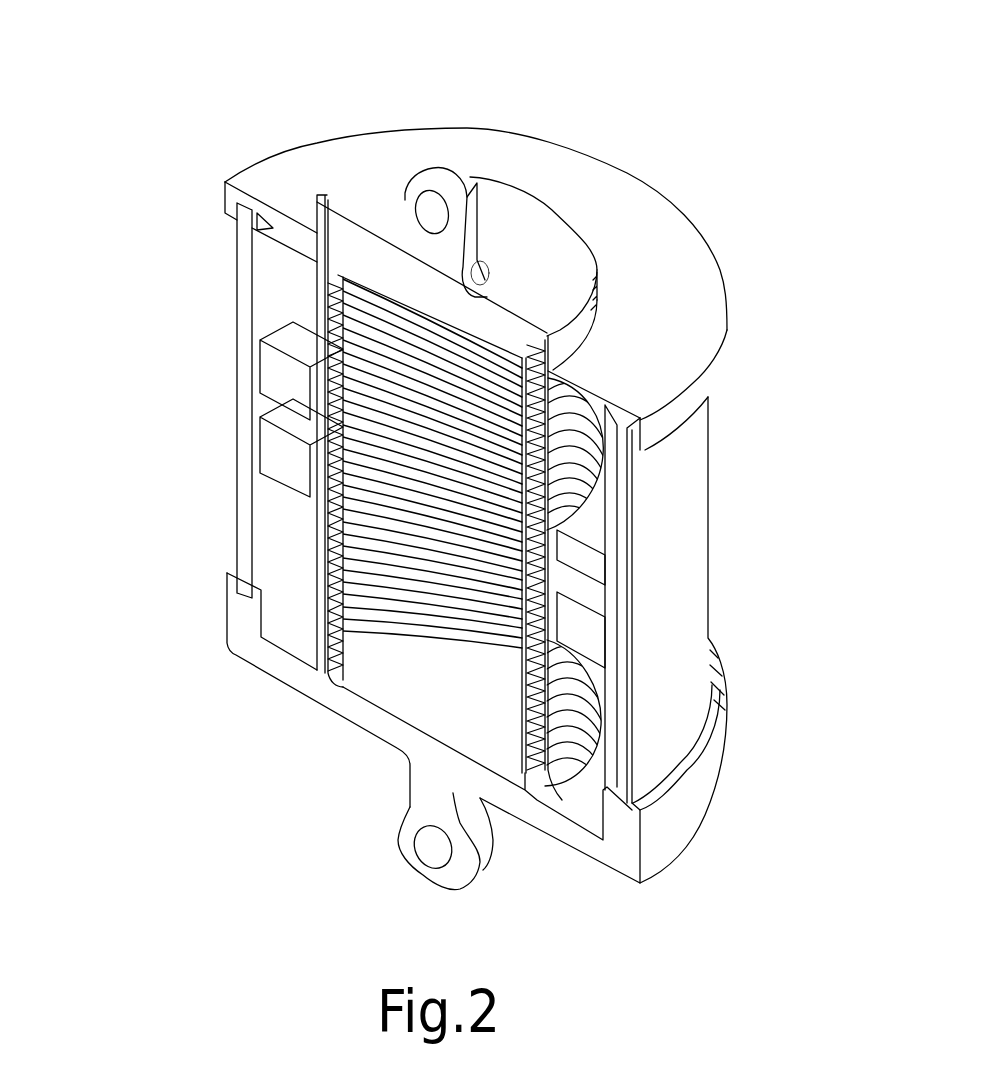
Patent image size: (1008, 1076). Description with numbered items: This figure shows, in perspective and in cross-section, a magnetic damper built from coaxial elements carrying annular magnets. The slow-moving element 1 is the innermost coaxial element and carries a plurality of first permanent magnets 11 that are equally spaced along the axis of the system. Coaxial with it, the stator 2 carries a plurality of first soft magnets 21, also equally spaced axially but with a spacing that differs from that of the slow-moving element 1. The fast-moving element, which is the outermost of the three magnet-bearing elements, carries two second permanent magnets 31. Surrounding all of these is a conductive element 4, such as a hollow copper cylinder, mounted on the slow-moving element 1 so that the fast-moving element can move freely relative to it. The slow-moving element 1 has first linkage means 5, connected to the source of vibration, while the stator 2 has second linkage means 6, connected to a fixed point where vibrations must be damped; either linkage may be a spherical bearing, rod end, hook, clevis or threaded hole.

The slow-moving element 1 is at (389, 748).
The stator 2 is at (368, 184).
The conductive element 4 is at (696, 608).
The first linkage means 5 is at (396, 850).
The second linkage means 6 is at (469, 172).
The first permanent magnets 11 is at (316, 634).
The first soft magnets 21 is at (578, 459).
The second permanent magnets 31 is at (264, 460).